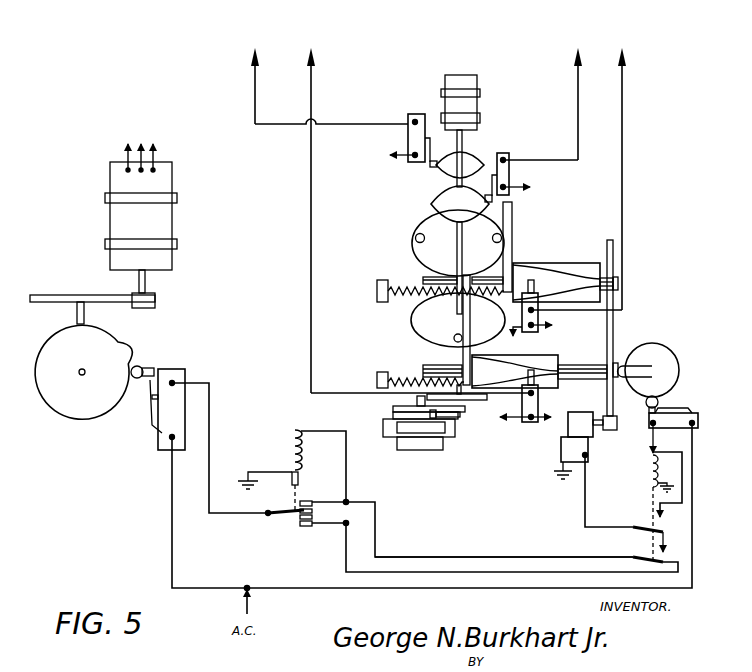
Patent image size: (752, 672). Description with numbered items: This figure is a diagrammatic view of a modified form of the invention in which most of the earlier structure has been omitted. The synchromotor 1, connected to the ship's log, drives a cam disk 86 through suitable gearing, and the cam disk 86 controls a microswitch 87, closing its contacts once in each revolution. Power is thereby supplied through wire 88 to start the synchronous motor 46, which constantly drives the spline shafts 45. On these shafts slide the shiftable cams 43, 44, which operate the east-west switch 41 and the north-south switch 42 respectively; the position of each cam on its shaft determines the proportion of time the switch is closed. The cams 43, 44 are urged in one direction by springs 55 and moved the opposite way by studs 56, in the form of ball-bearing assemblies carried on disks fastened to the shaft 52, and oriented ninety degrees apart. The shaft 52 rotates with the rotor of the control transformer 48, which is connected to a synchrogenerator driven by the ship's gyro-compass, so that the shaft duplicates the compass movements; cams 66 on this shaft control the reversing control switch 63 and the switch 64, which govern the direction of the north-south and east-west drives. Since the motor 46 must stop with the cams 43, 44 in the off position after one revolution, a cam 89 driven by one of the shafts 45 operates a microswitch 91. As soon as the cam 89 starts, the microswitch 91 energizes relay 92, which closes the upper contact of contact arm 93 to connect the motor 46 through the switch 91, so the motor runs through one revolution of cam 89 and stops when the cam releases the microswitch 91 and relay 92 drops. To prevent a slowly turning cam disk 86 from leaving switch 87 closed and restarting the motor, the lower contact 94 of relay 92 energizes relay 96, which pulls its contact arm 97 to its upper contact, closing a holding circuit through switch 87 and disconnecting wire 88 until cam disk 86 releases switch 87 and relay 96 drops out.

The synchromotor 1 is at (168, 185).
The east-west switch 41 is at (540, 402).
The north-south switch 42 is at (540, 322).
The shiftable cam 43 is at (552, 364).
The shiftable cam 44 is at (572, 266).
The spline shafts 45 is at (495, 277).
The synchronous motor 46 is at (566, 437).
The control transformer 48 is at (470, 108).
The shaft 52 is at (466, 148).
The springs 55 is at (403, 378).
The studs 56 is at (492, 240).
The reversing control switch 63 is at (508, 156).
The switch 64 is at (415, 120).
The cams 66 is at (446, 172).
The cam disk 86 is at (63, 415).
The microswitch 87 is at (163, 428).
The wire 88 is at (494, 546).
The cam 89 is at (665, 344).
The microswitch 91 is at (698, 414).
The relay 92 is at (648, 468).
The contact arm 93 is at (642, 526).
The lower contact 94 is at (642, 558).
The relay 96 is at (288, 442).
The contact arm 97 is at (278, 520).